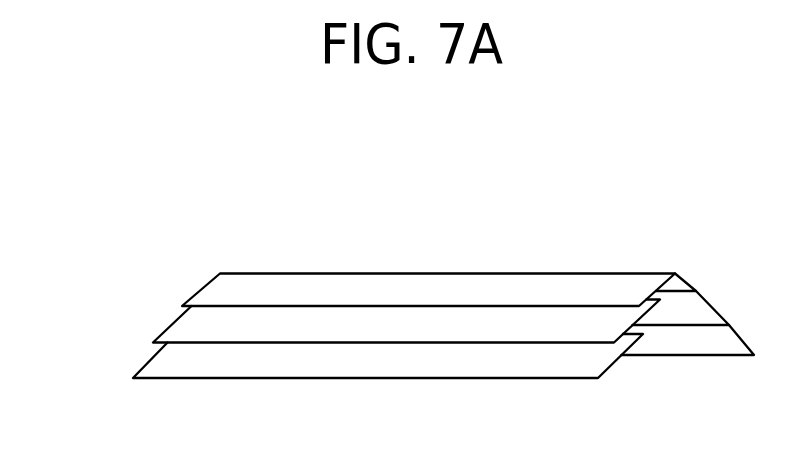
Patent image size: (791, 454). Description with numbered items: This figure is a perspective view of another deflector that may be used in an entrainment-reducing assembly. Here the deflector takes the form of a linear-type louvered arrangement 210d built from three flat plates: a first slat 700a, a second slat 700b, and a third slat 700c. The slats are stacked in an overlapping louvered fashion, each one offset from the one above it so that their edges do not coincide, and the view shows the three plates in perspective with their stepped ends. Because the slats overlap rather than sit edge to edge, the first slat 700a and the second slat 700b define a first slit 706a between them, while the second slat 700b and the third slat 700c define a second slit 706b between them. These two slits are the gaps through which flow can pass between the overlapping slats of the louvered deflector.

The linear-type louvered arrangement 210d is at (172, 150).
The first slat 700a is at (224, 289).
The second slat 700b is at (176, 329).
The third slat 700c is at (197, 368).
The first slit 706a is at (178, 311).
The second slit 706b is at (154, 350).